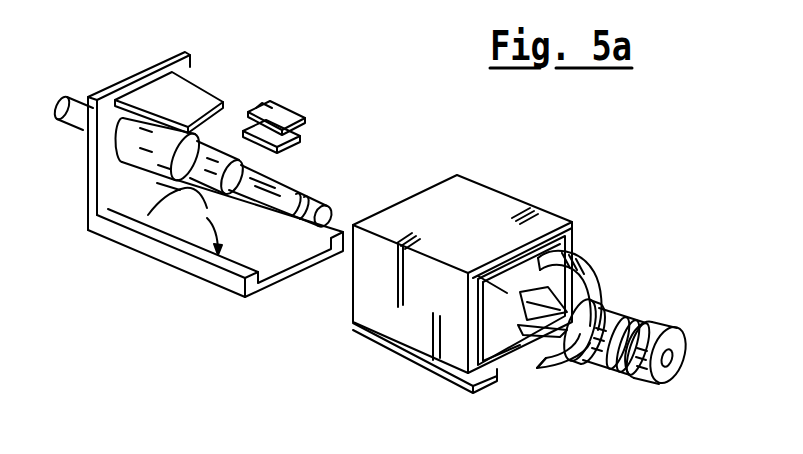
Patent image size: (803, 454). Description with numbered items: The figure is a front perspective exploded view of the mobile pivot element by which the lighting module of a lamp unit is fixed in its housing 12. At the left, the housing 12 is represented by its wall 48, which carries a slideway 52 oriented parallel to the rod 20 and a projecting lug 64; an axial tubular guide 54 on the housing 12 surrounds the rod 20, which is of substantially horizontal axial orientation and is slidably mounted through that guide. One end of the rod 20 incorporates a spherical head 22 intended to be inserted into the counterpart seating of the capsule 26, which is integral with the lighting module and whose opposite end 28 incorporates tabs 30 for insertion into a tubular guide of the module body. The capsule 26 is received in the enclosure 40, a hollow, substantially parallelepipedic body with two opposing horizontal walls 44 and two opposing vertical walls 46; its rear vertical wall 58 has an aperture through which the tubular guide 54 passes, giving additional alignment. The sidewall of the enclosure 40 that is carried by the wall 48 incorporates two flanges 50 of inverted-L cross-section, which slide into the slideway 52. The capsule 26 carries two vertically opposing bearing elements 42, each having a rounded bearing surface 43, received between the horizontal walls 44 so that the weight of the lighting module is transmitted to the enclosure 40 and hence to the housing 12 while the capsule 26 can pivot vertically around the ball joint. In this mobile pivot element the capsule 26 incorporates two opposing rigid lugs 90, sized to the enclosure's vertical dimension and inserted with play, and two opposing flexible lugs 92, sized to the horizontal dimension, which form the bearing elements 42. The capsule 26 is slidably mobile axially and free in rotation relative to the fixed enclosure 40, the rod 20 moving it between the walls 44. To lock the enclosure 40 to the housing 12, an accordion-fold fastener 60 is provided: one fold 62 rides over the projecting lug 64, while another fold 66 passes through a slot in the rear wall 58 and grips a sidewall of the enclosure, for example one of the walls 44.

The housing 12 is at (199, 59).
The rod 20 is at (289, 176).
The spherical head 22 is at (335, 210).
The capsule 26 is at (623, 302).
The opposite end 28 is at (640, 373).
The tabs 30 is at (640, 315).
The enclosure 40 is at (474, 284).
The bearing elements 42 is at (608, 294).
The bearing surface 43 is at (598, 288).
The horizontal walls 44 is at (482, 346).
The vertical walls 46 is at (430, 297).
The wall 48 is at (213, 179).
The flanges 50 is at (483, 390).
The slideway 52 is at (268, 285).
The axial tubular guide 54 is at (150, 200).
The rear vertical wall 58 is at (353, 285).
The accordion-fold fastener 60 is at (309, 94).
The fold 62 is at (268, 102).
The projecting lug 64 is at (198, 100).
The fold 66 is at (300, 143).
The rigid lugs 90 is at (537, 292).
The flexible lugs 92 is at (612, 284).